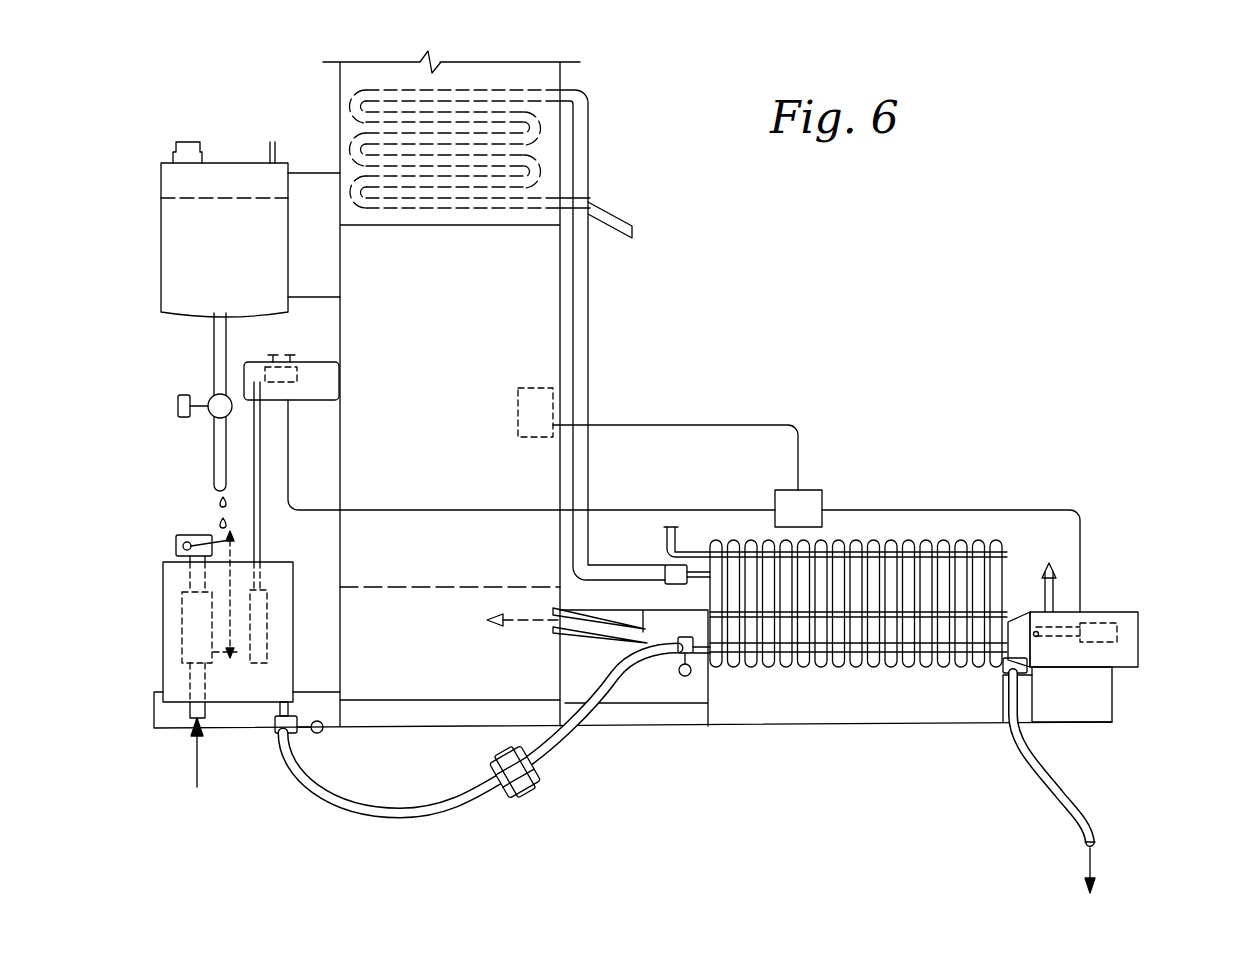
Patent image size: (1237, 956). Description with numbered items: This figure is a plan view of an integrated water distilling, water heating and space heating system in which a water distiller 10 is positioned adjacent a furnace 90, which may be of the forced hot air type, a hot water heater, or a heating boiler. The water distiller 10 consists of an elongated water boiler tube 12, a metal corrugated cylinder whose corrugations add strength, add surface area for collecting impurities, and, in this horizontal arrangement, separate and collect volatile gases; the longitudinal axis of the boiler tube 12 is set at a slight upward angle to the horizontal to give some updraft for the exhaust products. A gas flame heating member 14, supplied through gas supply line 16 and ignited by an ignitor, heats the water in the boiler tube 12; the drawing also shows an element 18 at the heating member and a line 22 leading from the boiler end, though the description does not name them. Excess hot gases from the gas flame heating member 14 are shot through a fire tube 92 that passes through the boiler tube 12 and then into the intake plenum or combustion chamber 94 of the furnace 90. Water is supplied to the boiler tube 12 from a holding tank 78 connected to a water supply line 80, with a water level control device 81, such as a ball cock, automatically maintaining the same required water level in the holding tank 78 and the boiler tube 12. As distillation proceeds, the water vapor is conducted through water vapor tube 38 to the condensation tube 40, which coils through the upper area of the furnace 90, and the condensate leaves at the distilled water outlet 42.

The water distiller 10 is at (973, 514).
The water boiler tube 12 is at (866, 542).
The gas flame heating member 14 is at (1127, 657).
The gas supply line 16 is at (1055, 588).
The switch 18 is at (1105, 630).
The flexible hose 22 is at (573, 745).
The water vapor tube 38 is at (582, 368).
The condensation tube 40 is at (545, 136).
The distilled water outlet 42 is at (620, 215).
The holding tank 78 is at (162, 640).
The water supply line 80 is at (197, 769).
The water level control device 81 is at (188, 580).
The furnace 90 is at (365, 62).
The fire tube 92 is at (603, 623).
The intake plenum or combustion chamber 94 is at (423, 705).